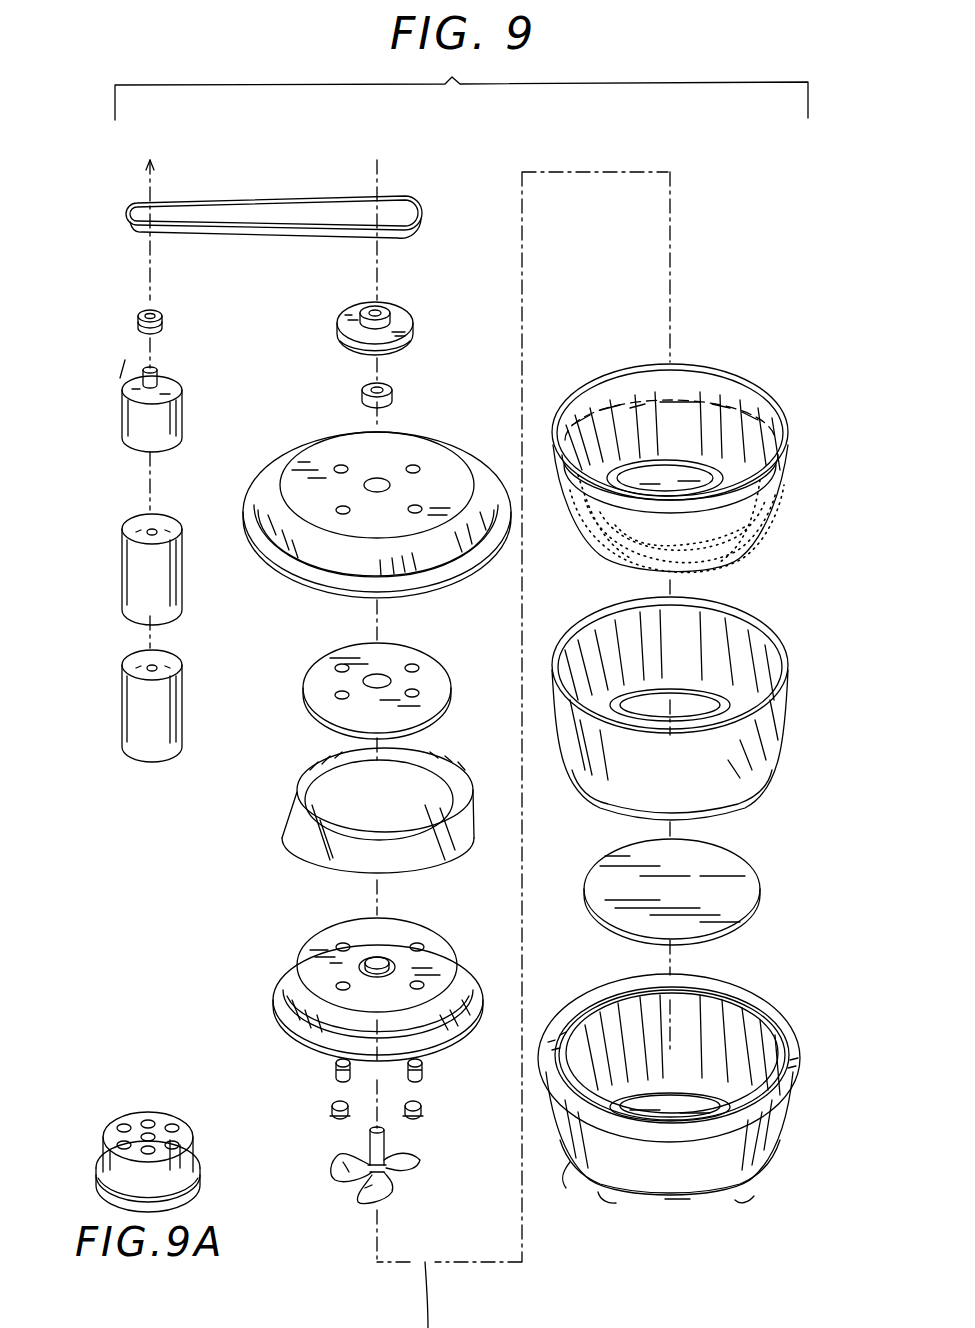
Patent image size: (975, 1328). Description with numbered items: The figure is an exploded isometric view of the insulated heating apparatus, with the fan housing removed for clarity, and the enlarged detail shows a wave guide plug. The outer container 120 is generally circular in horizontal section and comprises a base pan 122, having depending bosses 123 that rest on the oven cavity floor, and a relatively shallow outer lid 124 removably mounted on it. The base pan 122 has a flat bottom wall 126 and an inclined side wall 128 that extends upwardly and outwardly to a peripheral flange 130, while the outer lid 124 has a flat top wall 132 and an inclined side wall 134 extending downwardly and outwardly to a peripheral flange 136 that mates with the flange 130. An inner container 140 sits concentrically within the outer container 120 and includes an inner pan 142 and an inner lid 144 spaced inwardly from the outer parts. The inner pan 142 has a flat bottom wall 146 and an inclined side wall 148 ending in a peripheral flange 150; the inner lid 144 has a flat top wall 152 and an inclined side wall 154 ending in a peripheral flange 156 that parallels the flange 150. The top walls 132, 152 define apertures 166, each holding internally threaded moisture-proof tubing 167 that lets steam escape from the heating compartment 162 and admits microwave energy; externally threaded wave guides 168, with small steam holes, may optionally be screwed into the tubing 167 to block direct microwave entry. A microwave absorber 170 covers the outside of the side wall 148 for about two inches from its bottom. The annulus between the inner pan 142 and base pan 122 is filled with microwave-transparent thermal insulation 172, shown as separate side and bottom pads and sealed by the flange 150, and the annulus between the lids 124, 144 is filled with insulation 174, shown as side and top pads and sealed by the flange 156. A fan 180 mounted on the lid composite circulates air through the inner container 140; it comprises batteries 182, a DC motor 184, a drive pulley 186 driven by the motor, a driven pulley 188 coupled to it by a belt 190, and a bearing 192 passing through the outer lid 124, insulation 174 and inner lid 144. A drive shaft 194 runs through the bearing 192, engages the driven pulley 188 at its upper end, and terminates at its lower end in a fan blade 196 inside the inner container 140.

In FIG. 9, the outer container 120 is at (301, 437).
In FIG. 9, the base pan 122 is at (585, 1182).
In FIG. 9, the depending bosses 123 is at (605, 1205).
In FIG. 9, the outer lid 124 is at (420, 440).
In FIG. 9, the bottom wall of base pan 126 is at (697, 1107).
In FIG. 9, the side wall of base pan 128 is at (780, 1118).
In FIG. 9, the peripheral flange of base pan 130 is at (790, 1043).
In FIG. 9, the top wall of outer lid 132 is at (352, 442).
In FIG. 9, the side wall of outer lid 134 is at (265, 500).
In FIG. 9, the peripheral flange of outer lid 136 is at (262, 572).
In FIG. 9, the inner container 140 is at (313, 912).
In FIG. 9, the inner pan 142 is at (630, 568).
In FIG. 9, the inner lid 144 is at (438, 935).
In FIG. 9, the bottom wall of inner pan 146 is at (672, 490).
In FIG. 9, the side wall of inner pan 148 is at (740, 503).
In FIG. 9, the peripheral flange of inner pan 150 is at (790, 432).
In FIG. 9, the top wall of inner lid 152 is at (395, 930).
In FIG. 9, the side wall of inner lid 154 is at (292, 978).
In FIG. 9, the peripheral flange of inner lid 156 is at (282, 1024).
In FIG. 9, the heating compartment 162 is at (728, 459).
In FIG. 9, the apertures 166 is at (424, 505).
In FIG. 9, the moisture-proof tubing 167 is at (335, 1070).
In FIG. 9, the wave guides 168 is at (332, 1110).
In FIG. 9A, the wave guides 168 is at (118, 1170).
In FIG. 9, the microwave absorber 170 is at (740, 530).
In FIG. 9, the thermal insulation 172 is at (735, 848).
In FIG. 9, the insulation 174 is at (330, 770).
In FIG. 9, the fan 180 is at (119, 352).
In FIG. 9, the batteries 182 is at (140, 652).
In FIG. 9, the DC motor 184 is at (180, 392).
In FIG. 9, the drive pulley 186 is at (162, 322).
In FIG. 9, the driven pulley 188 is at (340, 344).
In FIG. 9, the belt 190 is at (240, 202).
In FIG. 9, the bearing 192 is at (362, 394).
In FIG. 9, the drive shaft 194 is at (369, 1145).
In FIG. 9, the fan blade 196 is at (335, 1165).